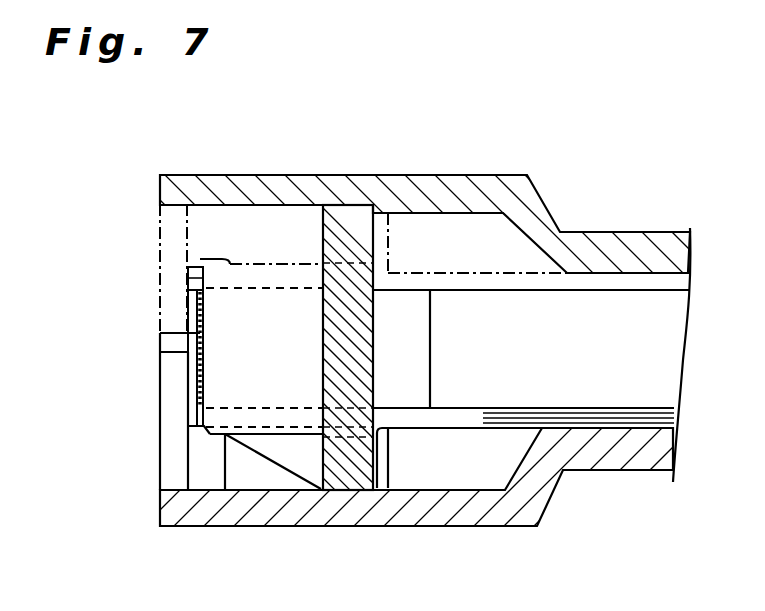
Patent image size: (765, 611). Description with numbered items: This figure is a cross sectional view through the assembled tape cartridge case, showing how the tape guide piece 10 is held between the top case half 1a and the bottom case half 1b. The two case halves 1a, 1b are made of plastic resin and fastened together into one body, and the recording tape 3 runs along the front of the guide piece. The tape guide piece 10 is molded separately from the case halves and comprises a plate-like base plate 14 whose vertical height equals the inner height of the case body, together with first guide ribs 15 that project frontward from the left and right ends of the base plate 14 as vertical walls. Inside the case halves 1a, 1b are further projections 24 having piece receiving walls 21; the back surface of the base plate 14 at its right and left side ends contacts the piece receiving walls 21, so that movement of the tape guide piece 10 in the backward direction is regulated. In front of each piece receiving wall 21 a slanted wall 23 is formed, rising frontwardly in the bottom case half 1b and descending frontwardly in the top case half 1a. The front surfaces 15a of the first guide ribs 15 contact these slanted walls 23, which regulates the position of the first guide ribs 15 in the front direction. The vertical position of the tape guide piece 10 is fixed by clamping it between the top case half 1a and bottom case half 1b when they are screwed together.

The top case half 1a is at (430, 175).
The bottom case half 1b is at (467, 527).
The recording tape 3 is at (190, 333).
The tape guide piece 10 is at (323, 207).
The piece receiving wall 21 is at (353, 205).
The base plate 14 is at (322, 343).
The slanted wall 23 is at (222, 260).
The first guide rib 15 is at (220, 327).
The front surface of first guide rib 15a is at (188, 278).
The projection 24 is at (382, 455).